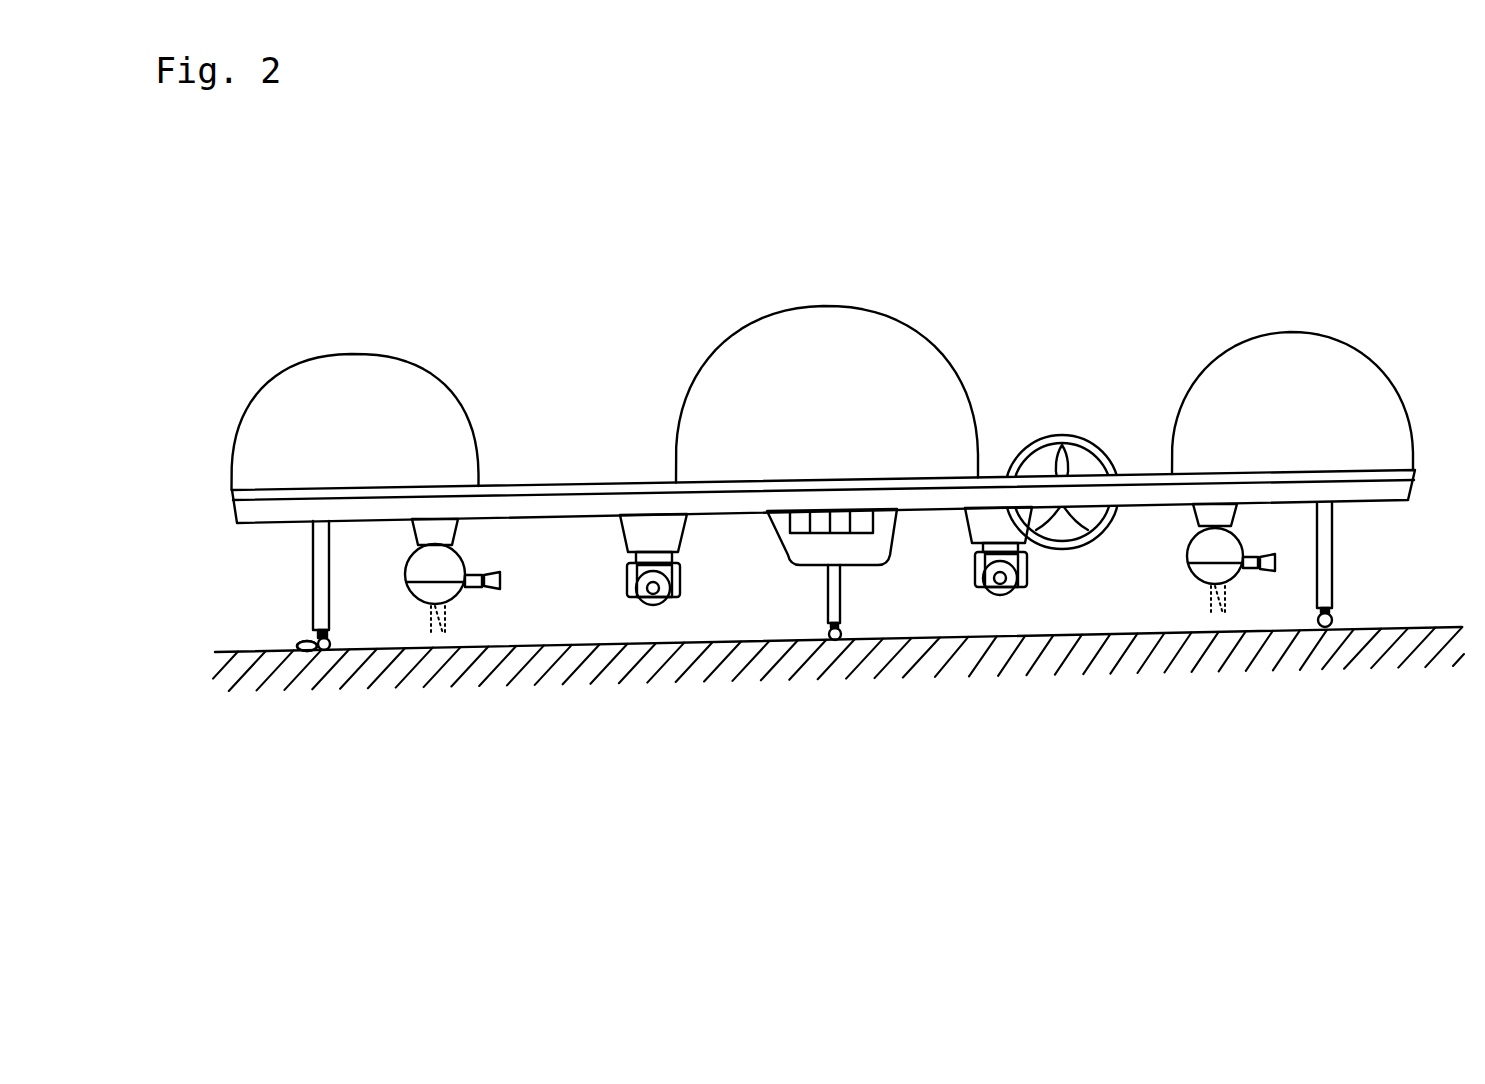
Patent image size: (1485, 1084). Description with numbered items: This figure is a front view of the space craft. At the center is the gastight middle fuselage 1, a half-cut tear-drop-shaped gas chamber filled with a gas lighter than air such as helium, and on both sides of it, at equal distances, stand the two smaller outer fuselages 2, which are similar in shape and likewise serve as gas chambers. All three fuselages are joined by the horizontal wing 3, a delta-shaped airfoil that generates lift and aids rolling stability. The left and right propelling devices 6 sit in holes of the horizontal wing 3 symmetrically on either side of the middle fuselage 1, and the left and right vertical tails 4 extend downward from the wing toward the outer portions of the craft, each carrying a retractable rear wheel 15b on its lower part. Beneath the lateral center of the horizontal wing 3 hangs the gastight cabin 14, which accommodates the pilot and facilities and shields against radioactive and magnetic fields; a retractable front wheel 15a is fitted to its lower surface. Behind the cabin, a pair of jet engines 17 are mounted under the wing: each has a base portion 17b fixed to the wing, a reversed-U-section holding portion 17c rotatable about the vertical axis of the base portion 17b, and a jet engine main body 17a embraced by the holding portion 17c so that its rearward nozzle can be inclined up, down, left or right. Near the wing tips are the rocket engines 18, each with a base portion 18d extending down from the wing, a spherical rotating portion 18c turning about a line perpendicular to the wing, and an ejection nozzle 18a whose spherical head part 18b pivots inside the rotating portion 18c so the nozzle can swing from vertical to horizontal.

The middle fuselage 1 is at (826, 305).
The outer fuselage 2 is at (356, 354).
The horizontal wing 3 is at (559, 505).
The vertical tail 4 is at (312, 613).
The propelling device 6 is at (1068, 434).
The cabin 14 is at (893, 546).
The front wheel 15a is at (843, 592).
The rear wheel 15b is at (300, 653).
The jet engine 17 is at (804, 606).
The jet engine main body 17a is at (668, 598).
The base portion 17b is at (620, 540).
The holding portion 17c is at (680, 562).
The rocket engine 18 is at (825, 668).
The ejection nozzle 18a is at (500, 578).
The head part 18b is at (425, 597).
The rotating portion 18c is at (457, 553).
The base portion 18d is at (411, 531).